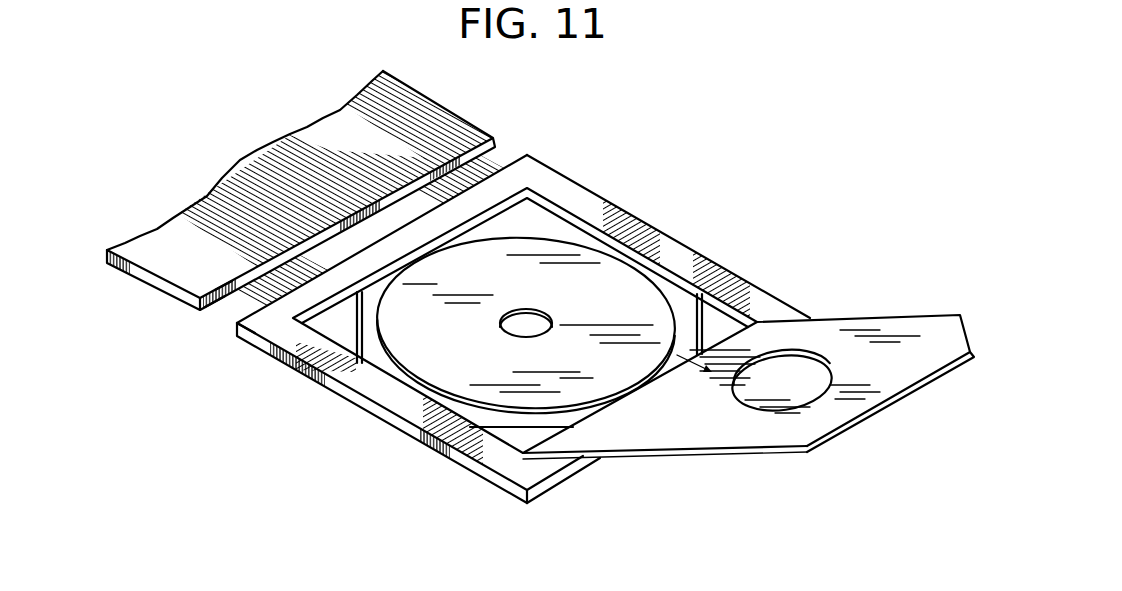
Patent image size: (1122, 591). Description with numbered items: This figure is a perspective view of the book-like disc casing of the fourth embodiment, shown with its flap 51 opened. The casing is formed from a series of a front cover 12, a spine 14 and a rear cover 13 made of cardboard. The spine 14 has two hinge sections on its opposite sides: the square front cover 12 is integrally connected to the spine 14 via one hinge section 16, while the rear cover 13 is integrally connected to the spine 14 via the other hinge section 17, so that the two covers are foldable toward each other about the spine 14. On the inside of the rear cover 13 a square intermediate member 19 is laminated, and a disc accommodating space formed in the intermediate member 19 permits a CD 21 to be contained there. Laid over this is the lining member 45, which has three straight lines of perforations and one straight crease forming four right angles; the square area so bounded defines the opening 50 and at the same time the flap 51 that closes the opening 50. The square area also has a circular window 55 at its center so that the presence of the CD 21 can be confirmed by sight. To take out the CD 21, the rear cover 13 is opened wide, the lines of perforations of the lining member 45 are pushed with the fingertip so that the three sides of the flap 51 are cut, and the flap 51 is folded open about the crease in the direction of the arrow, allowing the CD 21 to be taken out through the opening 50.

The front cover 12 is at (157, 293).
The rear cover 13 is at (395, 431).
The spine 14 is at (215, 322).
The hinge section 16 is at (223, 315).
The hinge section 17 is at (238, 333).
The intermediate member 19 is at (337, 332).
The CD 21 is at (632, 222).
The lining member 45 is at (552, 182).
The opening 50 is at (680, 293).
The flap 51 is at (888, 340).
The circular window 55 is at (803, 373).